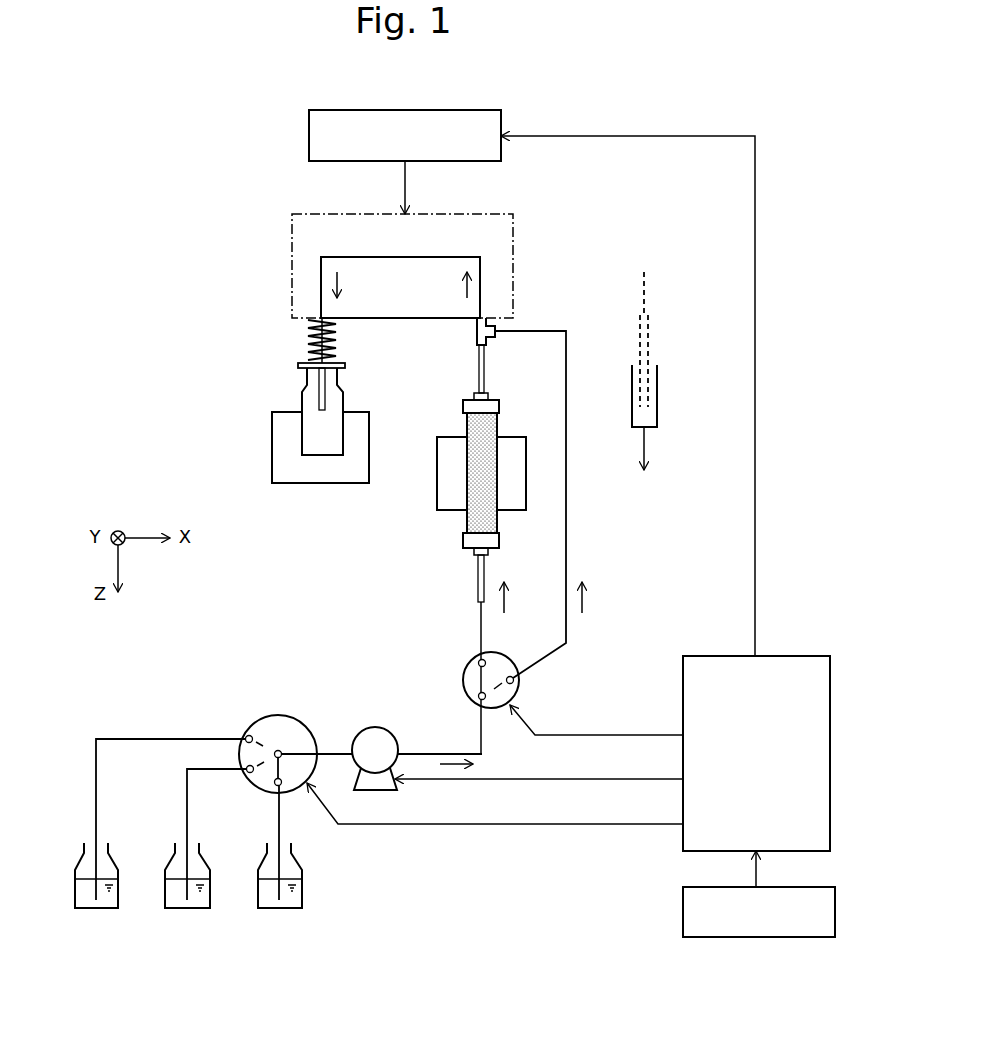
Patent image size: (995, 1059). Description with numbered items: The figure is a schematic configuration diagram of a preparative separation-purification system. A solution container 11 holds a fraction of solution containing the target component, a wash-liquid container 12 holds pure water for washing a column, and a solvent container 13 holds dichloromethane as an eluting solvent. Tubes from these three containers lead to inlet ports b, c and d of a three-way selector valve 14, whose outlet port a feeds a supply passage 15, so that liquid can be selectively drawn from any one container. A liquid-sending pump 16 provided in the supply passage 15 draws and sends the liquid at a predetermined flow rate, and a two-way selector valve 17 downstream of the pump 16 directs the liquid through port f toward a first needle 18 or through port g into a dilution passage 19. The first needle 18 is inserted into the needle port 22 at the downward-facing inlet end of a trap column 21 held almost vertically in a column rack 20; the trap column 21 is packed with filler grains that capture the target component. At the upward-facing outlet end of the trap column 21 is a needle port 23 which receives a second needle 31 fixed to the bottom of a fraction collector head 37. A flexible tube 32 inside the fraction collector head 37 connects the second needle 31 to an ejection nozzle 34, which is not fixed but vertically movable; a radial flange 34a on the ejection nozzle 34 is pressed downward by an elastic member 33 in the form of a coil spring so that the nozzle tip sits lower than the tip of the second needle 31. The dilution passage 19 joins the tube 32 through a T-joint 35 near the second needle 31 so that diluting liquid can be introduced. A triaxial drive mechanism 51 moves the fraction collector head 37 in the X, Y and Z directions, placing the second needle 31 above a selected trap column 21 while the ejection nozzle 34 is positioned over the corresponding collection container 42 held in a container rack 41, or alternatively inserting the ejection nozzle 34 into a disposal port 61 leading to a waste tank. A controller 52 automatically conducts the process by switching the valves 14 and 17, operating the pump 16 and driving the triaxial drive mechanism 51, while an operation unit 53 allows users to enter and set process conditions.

The solution container 11 is at (267, 858).
The wash-liquid container 12 is at (175, 858).
The solvent container 13 is at (84, 858).
The three-way selector valve 14 is at (278, 715).
The supply passage 15 is at (432, 752).
The liquid-sending pump 16 is at (366, 729).
The two-way selector valve 17 is at (518, 695).
The first needle 18 is at (475, 592).
The dilution passage 19 is at (566, 558).
The column rack 20 is at (437, 490).
The trap column 21 is at (467, 460).
The needle port 22 is at (472, 551).
The needle port 23 is at (474, 395).
The second needle 31 is at (477, 360).
The tube 32 is at (447, 257).
The elastic member 33 is at (305, 332).
The ejection nozzle 34 is at (317, 400).
The radial flange 34a is at (298, 367).
The T-joint 35 is at (477, 328).
The fraction collector head 37 is at (513, 265).
The container rack 41 is at (272, 470).
The collection container 42 is at (300, 425).
The triaxial drive mechanism 51 is at (309, 135).
The controller 52 is at (830, 765).
The operation unit 53 is at (835, 912).
The disposal port 61 is at (657, 388).